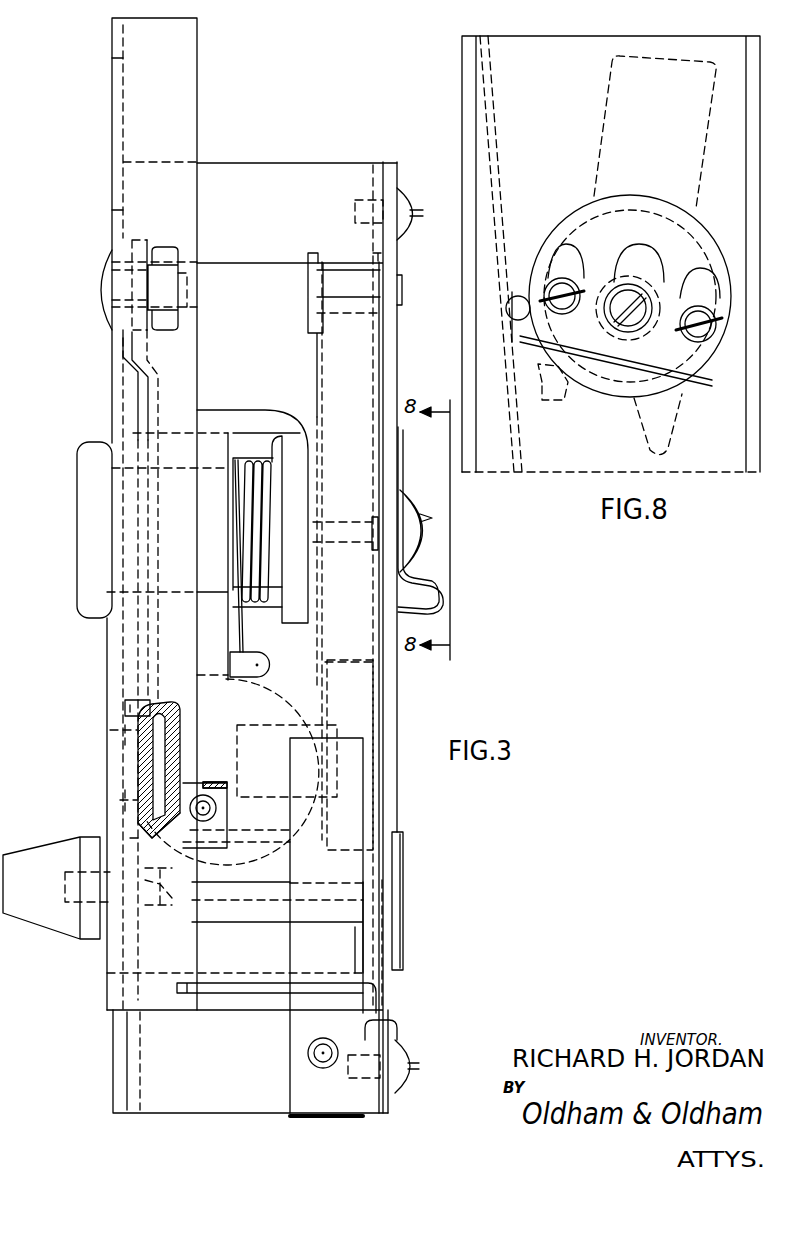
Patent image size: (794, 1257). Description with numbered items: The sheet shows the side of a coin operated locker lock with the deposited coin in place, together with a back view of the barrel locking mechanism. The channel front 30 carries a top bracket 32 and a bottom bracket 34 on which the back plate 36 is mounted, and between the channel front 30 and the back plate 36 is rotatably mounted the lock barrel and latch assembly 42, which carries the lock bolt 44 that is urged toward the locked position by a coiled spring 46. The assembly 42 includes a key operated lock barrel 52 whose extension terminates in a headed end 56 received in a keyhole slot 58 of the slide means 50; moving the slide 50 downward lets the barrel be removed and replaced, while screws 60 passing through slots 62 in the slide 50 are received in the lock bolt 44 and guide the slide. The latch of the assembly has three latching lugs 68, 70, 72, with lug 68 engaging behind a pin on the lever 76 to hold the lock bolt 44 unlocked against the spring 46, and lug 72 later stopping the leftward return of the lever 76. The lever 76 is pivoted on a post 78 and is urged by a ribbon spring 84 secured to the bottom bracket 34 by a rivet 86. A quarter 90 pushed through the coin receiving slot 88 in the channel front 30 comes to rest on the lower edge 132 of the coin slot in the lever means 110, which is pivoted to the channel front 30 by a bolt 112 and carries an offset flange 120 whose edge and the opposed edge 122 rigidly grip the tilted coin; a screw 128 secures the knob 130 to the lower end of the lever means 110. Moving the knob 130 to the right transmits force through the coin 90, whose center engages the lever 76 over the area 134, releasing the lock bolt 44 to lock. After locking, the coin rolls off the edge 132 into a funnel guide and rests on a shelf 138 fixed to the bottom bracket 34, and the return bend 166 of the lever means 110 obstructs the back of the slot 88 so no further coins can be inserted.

In FIG. 3, the channel front 30 is at (135, 98).
In FIG. 3, the top bracket 32 is at (308, 170).
In FIG. 3, the bottom bracket 34 is at (190, 1100).
In FIG. 3, the back plate 36 is at (390, 372).
In FIG. 3, the lock barrel and latch assembly 42 is at (74, 498).
In FIG. 3, the lock bolt 44 is at (228, 413).
In FIG. 8, the lock bolt 44 is at (706, 152).
In FIG. 3, the coiled spring 46 is at (243, 465).
In FIG. 3, the slide means 50 is at (418, 598).
In FIG. 3, the lock barrel 52 is at (214, 594).
In FIG. 8, the headed end 56 is at (627, 336).
In FIG. 8, the keyhole slot 58 is at (668, 252).
In FIG. 3, the screws 60 is at (430, 502).
In FIG. 8, the screws 60 is at (546, 282).
In FIG. 8, the slots 62 is at (562, 248).
In FIG. 8, the latching lug 68 is at (512, 348).
In FIG. 8, the latching lug 70 is at (552, 402).
In FIG. 8, the latching lug 72 is at (682, 426).
In FIG. 3, the lever 76 is at (328, 641).
In FIG. 3, the post 78 is at (308, 300).
In FIG. 3, the ribbon spring 84 is at (300, 937).
In FIG. 3, the rivet 86 is at (322, 1056).
In FIG. 3, the coin receiving slot 88 is at (110, 800).
In FIG. 3, the quarter 90 is at (250, 858).
In FIG. 3, the lever means 110 is at (158, 378).
In FIG. 3, the bolt 112 is at (180, 258).
In FIG. 3, the flange 120 is at (230, 675).
In FIG. 3, the edge 122 is at (112, 730).
In FIG. 3, the screw 128 is at (165, 907).
In FIG. 3, the knob 130 is at (28, 860).
In FIG. 3, the lower edge 132 is at (140, 834).
In FIG. 3, the area 134 is at (215, 790).
In FIG. 3, the shelf 138 is at (228, 993).
In FIG. 3, the return bend 166 is at (137, 702).